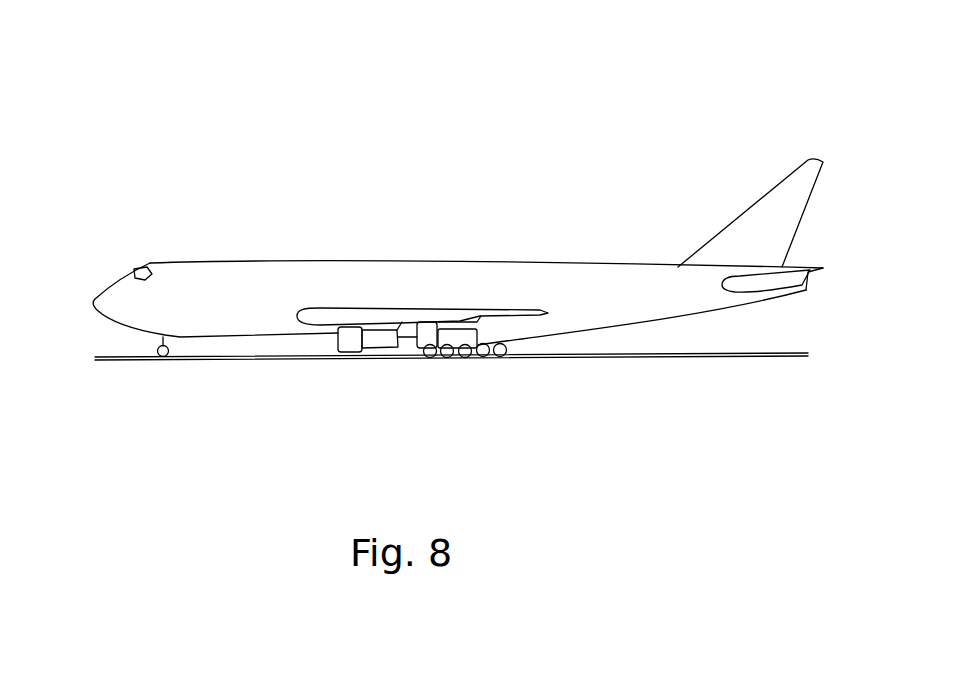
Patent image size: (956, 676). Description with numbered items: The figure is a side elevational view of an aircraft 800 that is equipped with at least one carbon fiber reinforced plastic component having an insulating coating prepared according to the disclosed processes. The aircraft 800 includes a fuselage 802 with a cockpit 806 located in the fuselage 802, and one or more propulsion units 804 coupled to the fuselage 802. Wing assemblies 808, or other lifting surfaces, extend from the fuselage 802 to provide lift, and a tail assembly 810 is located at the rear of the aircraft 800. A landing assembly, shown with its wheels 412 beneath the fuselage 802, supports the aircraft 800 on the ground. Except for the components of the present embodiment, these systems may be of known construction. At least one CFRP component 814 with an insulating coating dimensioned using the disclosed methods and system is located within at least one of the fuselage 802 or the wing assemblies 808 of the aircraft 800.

The aircraft 800 is at (178, 81).
The fuselage 802 is at (477, 266).
The propulsion unit 804 is at (349, 337).
The cockpit 806 is at (135, 265).
The wing assembly 808 is at (320, 313).
The tail assembly 810 is at (748, 228).
The carbon fiber reinforced plastic (CFRP) component 814 is at (418, 314).
The wheels 412 is at (465, 348).